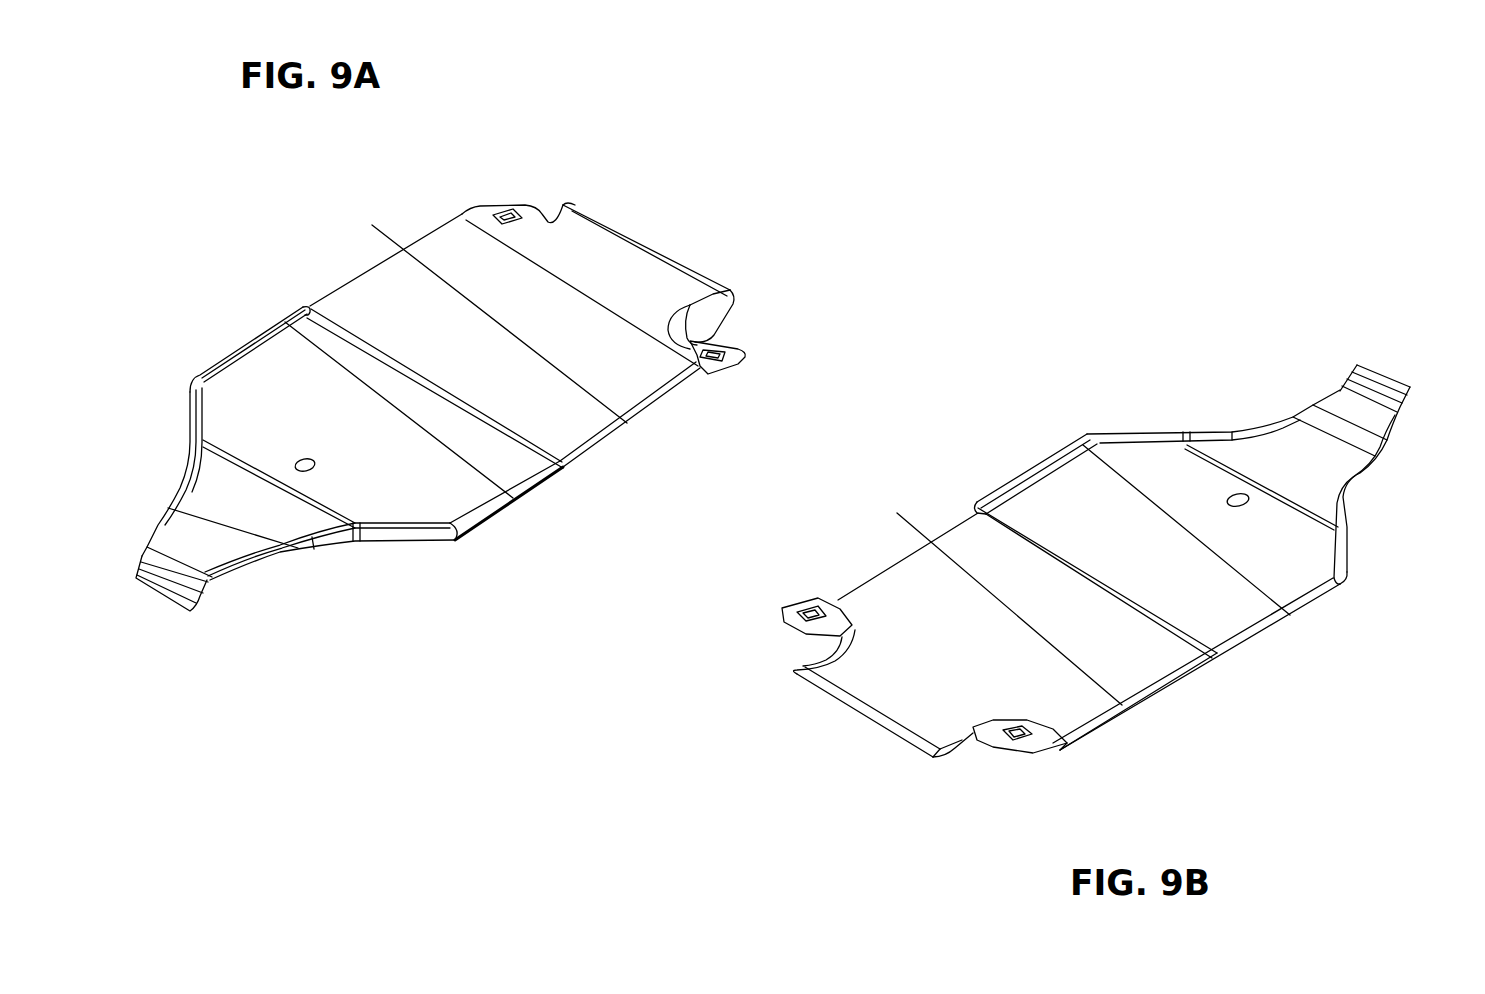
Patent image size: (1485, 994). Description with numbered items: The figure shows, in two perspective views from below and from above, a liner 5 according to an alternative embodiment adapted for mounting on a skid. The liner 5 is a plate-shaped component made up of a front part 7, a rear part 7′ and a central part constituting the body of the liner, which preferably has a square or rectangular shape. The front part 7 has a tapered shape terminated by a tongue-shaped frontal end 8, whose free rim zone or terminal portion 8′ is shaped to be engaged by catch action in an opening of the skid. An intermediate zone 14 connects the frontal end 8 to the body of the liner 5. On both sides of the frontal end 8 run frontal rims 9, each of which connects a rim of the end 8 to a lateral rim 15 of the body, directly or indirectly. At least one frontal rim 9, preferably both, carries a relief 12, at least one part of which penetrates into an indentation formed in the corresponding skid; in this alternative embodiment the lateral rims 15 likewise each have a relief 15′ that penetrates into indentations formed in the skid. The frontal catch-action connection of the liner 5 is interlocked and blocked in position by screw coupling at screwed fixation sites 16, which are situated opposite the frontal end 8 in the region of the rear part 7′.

In FIG. 9A, the liner 5 is at (206, 195).
In FIG. 9B, the liner 5 is at (1313, 707).
In FIG. 9B, the front part 7 is at (1247, 378).
In FIG. 9A, the rear part 7′ is at (556, 172).
In FIG. 9B, the rear part 7′ is at (990, 780).
In FIG. 9A, the frontal end 8 is at (188, 555).
In FIG. 9B, the frontal end 8 is at (1340, 430).
In FIG. 9A, the terminal portion 8′ is at (137, 557).
In FIG. 9B, the terminal portion 8′ is at (1393, 388).
In FIG. 9A, the frontal rim 9 is at (380, 542).
In FIG. 9B, the frontal rim 9 is at (1348, 537).
In FIG. 9A, the relief 12 is at (197, 432).
In FIG. 9B, the relief 12 is at (1168, 432).
In FIG. 9A, the intermediate zone 14 is at (265, 495).
In FIG. 9B, the intermediate zone 14 is at (1290, 483).
In FIG. 9A, the lateral rim 15 is at (372, 268).
In FIG. 9B, the lateral rim 15 is at (893, 563).
In FIG. 9A, the relief 15′ is at (285, 322).
In FIG. 9B, the relief 15′ is at (1083, 445).
In FIG. 9A, the screwed fixation site 16 is at (483, 212).
In FIG. 9B, the screwed fixation site 16 is at (806, 610).